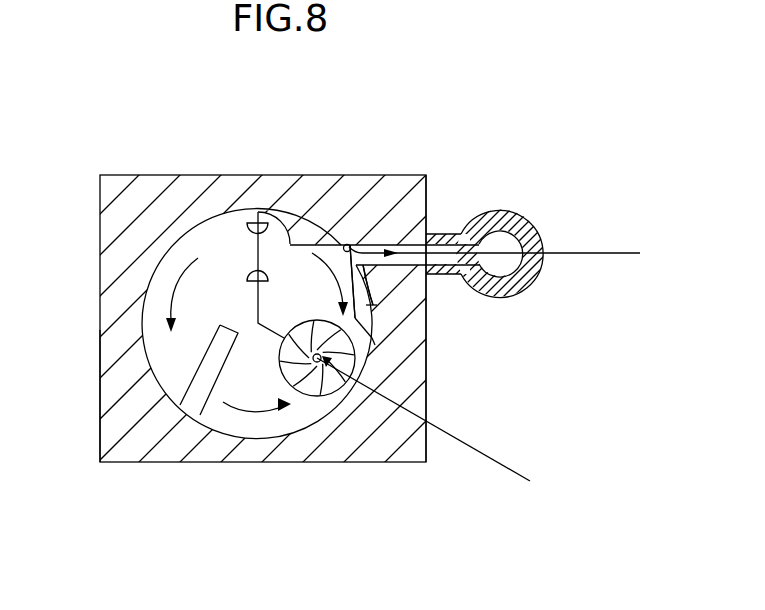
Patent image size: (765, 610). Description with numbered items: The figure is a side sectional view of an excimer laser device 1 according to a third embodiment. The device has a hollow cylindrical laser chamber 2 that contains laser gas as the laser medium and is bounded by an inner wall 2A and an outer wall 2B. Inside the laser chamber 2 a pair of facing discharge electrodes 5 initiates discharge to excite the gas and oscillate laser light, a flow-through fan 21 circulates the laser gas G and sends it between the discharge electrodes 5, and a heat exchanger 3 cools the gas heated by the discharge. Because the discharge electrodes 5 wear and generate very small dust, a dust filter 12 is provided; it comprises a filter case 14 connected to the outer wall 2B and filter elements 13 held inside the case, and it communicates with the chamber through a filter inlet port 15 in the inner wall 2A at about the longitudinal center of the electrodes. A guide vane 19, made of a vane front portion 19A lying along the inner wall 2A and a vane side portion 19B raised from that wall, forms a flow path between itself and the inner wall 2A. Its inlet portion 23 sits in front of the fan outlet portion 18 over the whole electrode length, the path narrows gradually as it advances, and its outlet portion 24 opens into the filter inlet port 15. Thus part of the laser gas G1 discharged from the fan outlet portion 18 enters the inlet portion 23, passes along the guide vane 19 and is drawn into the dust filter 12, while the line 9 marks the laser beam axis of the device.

The excimer laser device 1 is at (83, 152).
The laser chamber 2 is at (268, 190).
The inner wall 2A is at (146, 341).
The outer wall 2B is at (428, 190).
The heat exchanger 3 is at (201, 398).
The discharge electrodes 5 is at (257, 224).
The laser beam axis 9 is at (632, 262).
The dust filter 12 is at (521, 196).
The filter elements 13 is at (530, 268).
The filter case 14 is at (541, 239).
The filter inlet port 15 is at (343, 240).
The fan outlet portion 18 is at (378, 348).
The guide vane 19 is at (538, 308).
The vane front portion 19A is at (373, 292).
The vane side portion 19B is at (373, 318).
The flow-through fan 21 is at (322, 397).
The inlet portion 23 is at (373, 330).
The outlet portion 24 is at (373, 270).
The laser gas G is at (181, 285).
The laser gas part G1 is at (380, 305).